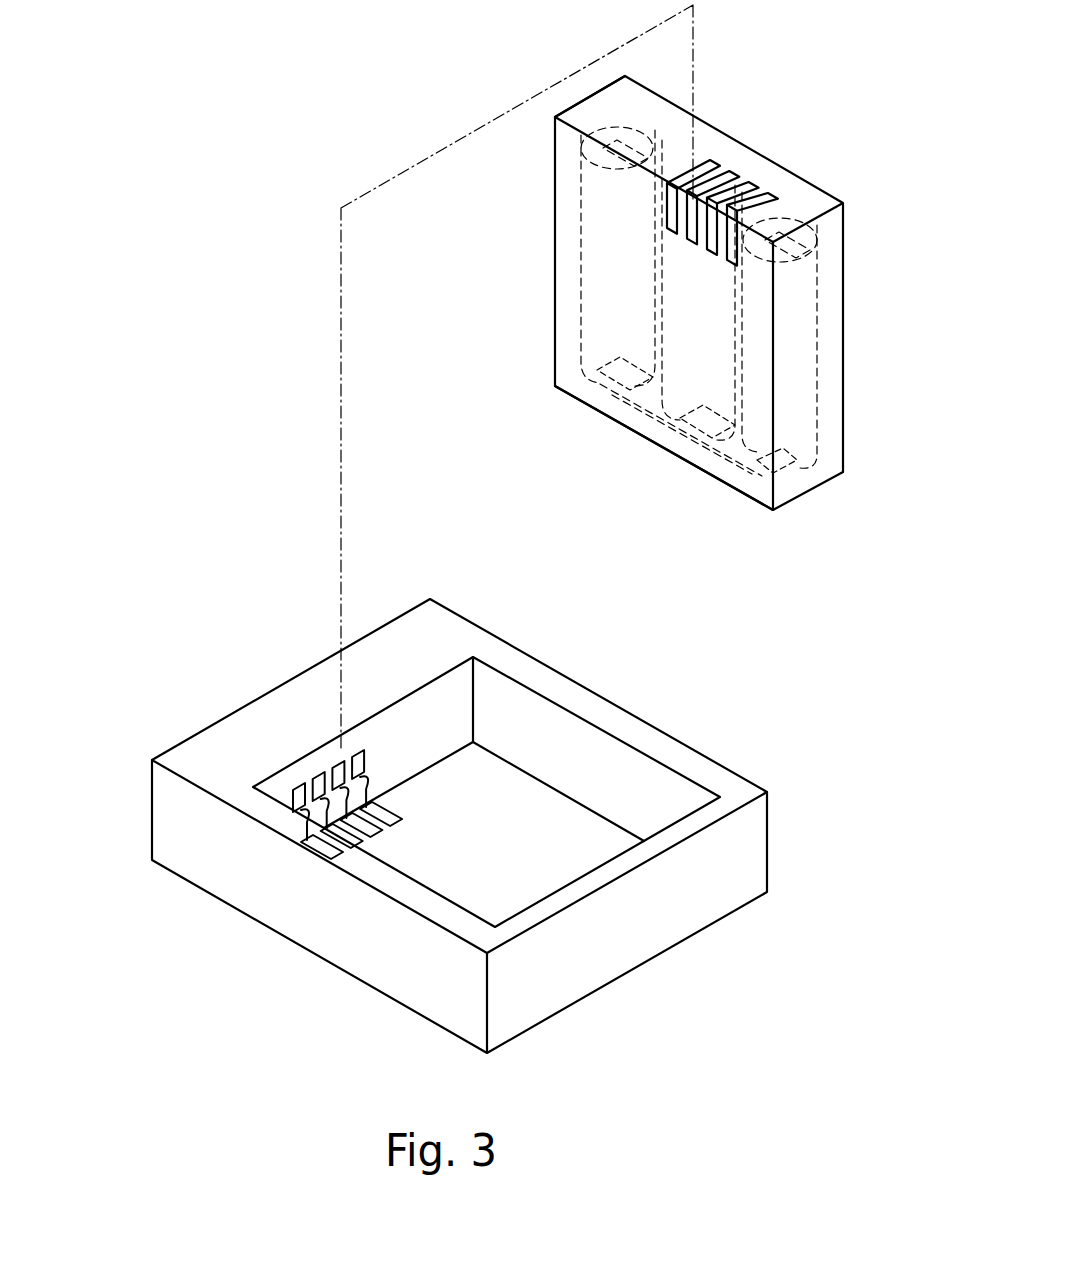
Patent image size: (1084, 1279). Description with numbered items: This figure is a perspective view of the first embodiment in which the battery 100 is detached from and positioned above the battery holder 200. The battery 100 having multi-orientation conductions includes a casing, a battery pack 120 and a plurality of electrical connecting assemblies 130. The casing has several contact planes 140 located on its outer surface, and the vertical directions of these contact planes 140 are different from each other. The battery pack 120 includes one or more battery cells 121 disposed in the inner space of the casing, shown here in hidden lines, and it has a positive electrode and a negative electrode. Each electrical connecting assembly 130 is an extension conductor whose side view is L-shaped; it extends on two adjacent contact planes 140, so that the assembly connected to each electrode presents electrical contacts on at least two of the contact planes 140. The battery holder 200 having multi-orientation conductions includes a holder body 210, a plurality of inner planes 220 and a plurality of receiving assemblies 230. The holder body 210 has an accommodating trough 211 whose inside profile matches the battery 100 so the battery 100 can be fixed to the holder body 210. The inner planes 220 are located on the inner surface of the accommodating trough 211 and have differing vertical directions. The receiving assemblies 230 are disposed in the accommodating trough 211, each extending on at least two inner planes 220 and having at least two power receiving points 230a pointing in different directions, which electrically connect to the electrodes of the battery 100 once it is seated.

The battery 100 is at (659, 296).
The battery pack 120 is at (583, 233).
The battery cell 121 is at (610, 313).
The electrical connecting assembly 130 is at (770, 201).
The contact plane 140 is at (603, 103).
The battery holder 200 is at (442, 806).
The holder body 210 is at (218, 747).
The accommodating trough 211 is at (556, 790).
The inner plane 220 is at (442, 705).
The receiving assembly 230 is at (375, 873).
The power receiving point 230a is at (390, 822).